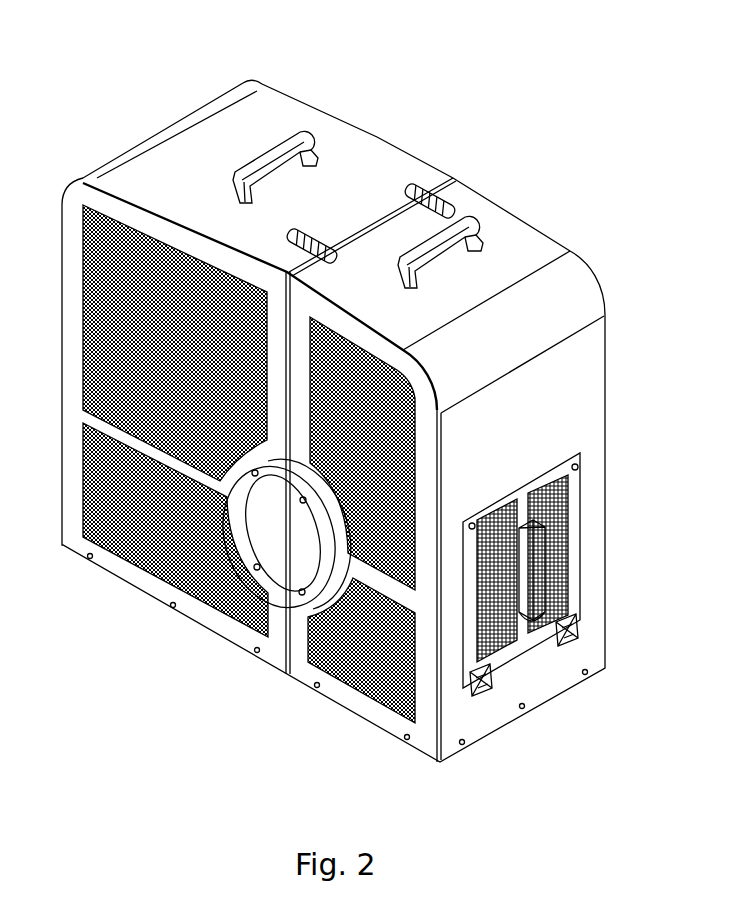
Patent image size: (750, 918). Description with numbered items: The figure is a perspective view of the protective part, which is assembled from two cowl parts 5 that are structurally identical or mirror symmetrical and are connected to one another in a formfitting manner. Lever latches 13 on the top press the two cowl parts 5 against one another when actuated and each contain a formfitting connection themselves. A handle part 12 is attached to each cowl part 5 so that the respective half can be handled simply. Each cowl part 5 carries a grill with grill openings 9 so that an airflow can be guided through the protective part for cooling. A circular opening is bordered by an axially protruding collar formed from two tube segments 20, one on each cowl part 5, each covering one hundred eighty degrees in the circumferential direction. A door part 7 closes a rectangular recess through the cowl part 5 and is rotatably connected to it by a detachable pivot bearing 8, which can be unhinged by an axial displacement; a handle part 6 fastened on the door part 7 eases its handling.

The cowl part 5 is at (141, 180).
The handle part 6 is at (542, 567).
The door part 7 is at (520, 638).
The detachable pivot bearing 8 is at (570, 637).
The grill openings 9 is at (170, 542).
The handle part 12 is at (272, 157).
The lever latch 13 is at (440, 200).
The tube segment 20 is at (322, 542).